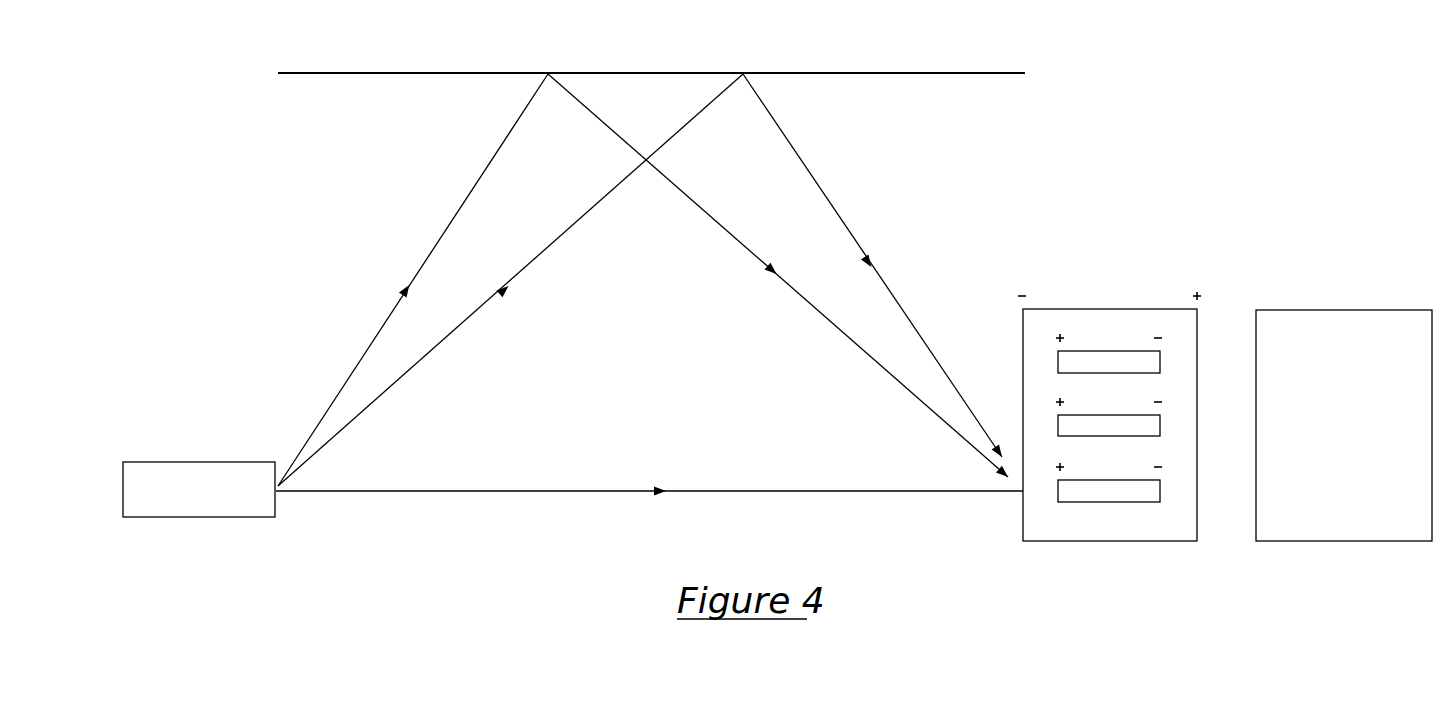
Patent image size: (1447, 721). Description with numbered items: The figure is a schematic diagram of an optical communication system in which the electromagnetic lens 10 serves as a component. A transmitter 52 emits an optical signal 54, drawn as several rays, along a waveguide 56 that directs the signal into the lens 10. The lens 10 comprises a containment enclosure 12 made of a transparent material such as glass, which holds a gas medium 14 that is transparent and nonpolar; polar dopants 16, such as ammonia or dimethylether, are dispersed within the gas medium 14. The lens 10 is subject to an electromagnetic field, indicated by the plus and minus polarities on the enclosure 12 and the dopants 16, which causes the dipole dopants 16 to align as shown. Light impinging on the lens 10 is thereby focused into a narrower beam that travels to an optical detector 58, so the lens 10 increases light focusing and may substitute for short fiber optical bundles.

The electromagnetic lens 10 is at (1109, 432).
The containment enclosure 12 is at (1165, 542).
The gas medium 14 is at (1103, 425).
The polar dopants 16 is at (1075, 502).
The transmitter 52 is at (218, 518).
The optical signal 54 is at (444, 230).
The waveguide 56 is at (906, 73).
The optical detector 58 is at (1344, 542).